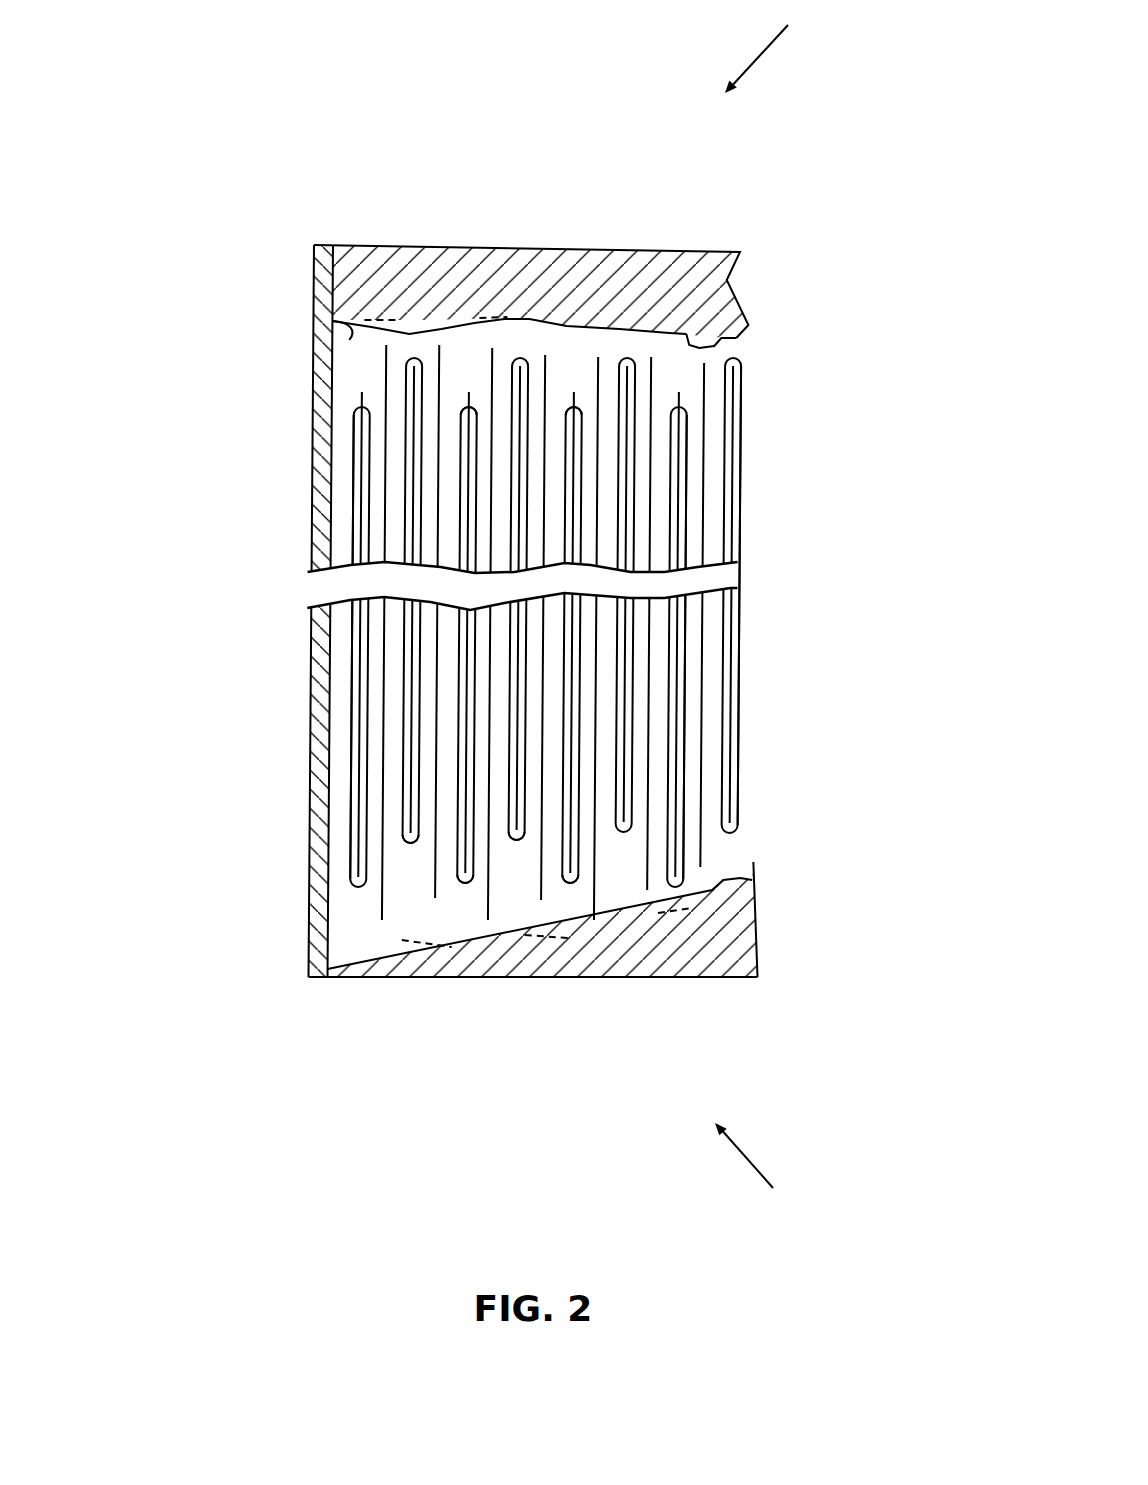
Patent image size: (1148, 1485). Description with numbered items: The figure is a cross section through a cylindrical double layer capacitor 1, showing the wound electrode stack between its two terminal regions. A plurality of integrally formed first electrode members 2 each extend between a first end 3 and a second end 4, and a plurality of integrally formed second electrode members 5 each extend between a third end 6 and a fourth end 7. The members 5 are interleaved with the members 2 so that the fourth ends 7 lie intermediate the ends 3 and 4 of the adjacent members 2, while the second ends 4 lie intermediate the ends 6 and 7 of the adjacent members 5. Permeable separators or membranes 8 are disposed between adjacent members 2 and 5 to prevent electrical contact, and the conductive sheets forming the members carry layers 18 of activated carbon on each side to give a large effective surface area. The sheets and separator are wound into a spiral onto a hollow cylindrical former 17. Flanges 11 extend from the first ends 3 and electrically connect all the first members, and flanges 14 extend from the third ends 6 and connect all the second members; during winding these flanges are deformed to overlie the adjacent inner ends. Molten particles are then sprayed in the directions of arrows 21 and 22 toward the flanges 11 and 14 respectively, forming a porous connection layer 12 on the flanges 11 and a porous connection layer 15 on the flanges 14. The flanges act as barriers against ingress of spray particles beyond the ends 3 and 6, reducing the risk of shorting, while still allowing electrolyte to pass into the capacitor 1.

The cylindrical double layer capacitor 1 is at (510, 611).
The first electrode members 2 is at (394, 440).
The first end 3 is at (430, 321).
The second end 4 is at (412, 845).
The second electrode members 5 is at (338, 680).
The third end 6 is at (465, 887).
The fourth end 7 is at (470, 396).
The permeable separators or membranes 8 is at (575, 392).
The flanges 11 is at (333, 320).
The porous connection layer 12 is at (388, 250).
The flanges 14 is at (353, 952).
The porous connection layer 15 is at (357, 977).
The hollow cylindrical former 17 is at (320, 264).
The layers of activated carbon 18 is at (350, 493).
The arrow 21 is at (763, 48).
The arrow 22 is at (747, 1162).